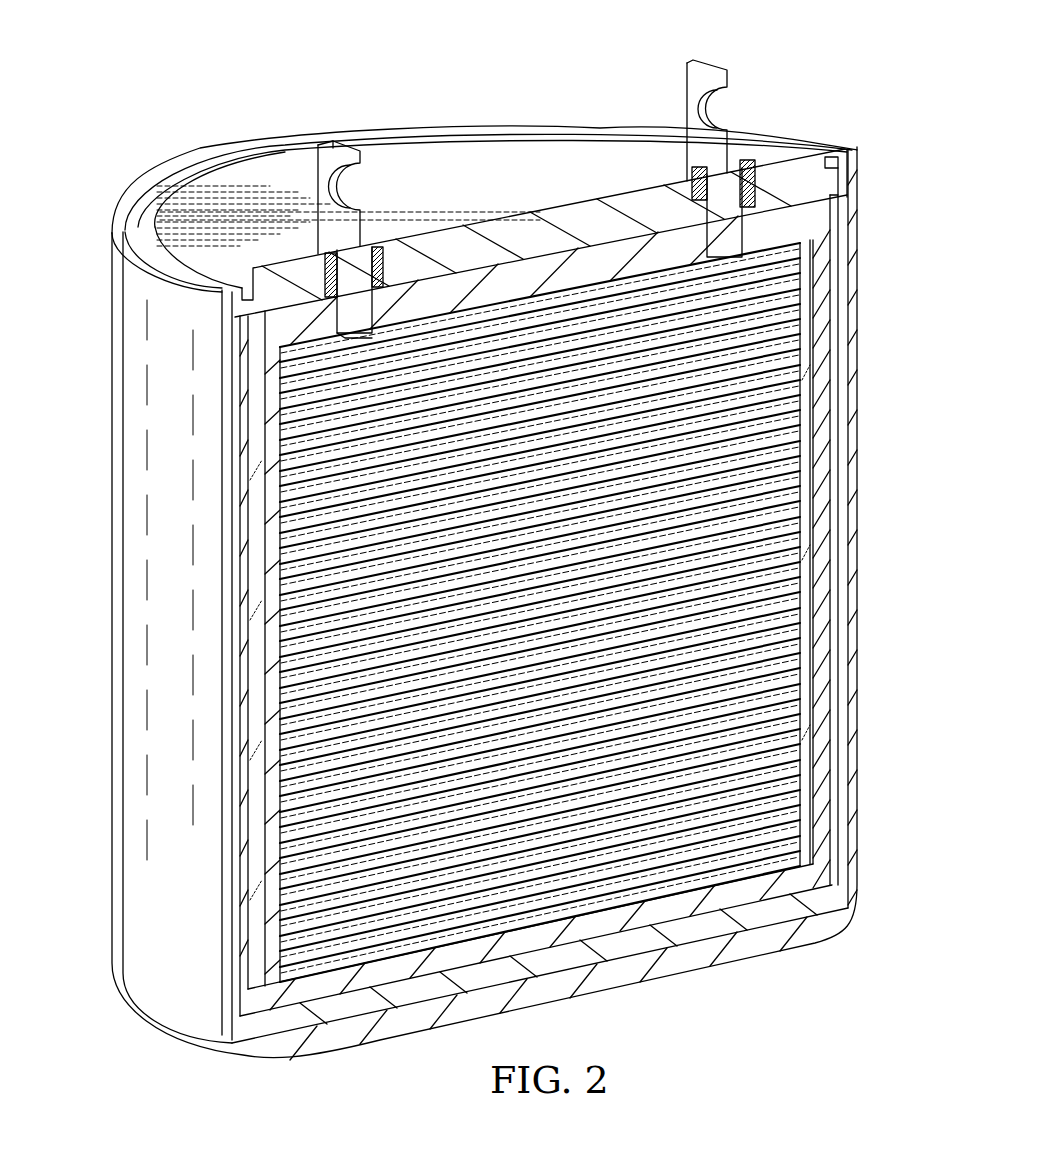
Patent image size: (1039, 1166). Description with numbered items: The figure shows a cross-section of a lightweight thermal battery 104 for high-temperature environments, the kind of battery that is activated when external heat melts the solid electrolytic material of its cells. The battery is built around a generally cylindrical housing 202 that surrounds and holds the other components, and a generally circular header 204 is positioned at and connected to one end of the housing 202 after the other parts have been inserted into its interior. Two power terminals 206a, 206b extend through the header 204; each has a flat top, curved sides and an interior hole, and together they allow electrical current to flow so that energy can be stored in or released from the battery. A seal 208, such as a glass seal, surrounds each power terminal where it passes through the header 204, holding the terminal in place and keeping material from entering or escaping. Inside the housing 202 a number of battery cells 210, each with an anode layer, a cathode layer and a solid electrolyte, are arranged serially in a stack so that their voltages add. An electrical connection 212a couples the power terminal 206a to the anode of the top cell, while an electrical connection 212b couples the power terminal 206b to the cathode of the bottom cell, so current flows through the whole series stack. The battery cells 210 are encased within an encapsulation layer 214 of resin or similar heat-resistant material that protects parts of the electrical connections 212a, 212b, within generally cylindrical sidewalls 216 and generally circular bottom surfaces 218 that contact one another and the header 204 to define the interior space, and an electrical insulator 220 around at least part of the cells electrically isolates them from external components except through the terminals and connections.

The thermal battery 104 is at (173, 99).
The housing 202 is at (110, 296).
The header 204 is at (540, 128).
The power terminal 206a is at (708, 62).
The power terminal 206b is at (347, 143).
The seal 208 is at (757, 182).
The battery cell 210 is at (800, 607).
The electrical connection 212a is at (657, 263).
The electrical connection 212b is at (405, 322).
The encapsulation layer 214 is at (568, 253).
The sidewall 216 is at (820, 500).
The bottom surface 218 is at (740, 928).
The electrical insulator 220 is at (833, 727).